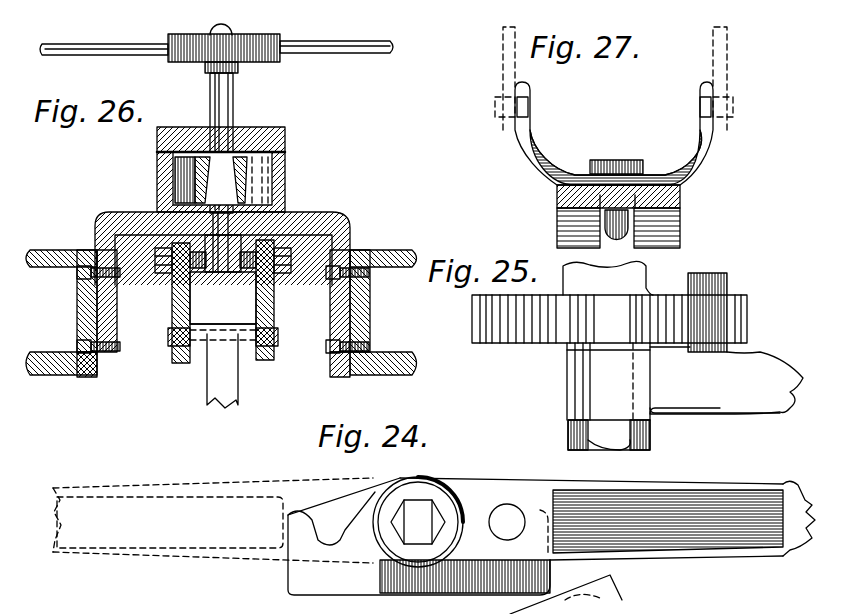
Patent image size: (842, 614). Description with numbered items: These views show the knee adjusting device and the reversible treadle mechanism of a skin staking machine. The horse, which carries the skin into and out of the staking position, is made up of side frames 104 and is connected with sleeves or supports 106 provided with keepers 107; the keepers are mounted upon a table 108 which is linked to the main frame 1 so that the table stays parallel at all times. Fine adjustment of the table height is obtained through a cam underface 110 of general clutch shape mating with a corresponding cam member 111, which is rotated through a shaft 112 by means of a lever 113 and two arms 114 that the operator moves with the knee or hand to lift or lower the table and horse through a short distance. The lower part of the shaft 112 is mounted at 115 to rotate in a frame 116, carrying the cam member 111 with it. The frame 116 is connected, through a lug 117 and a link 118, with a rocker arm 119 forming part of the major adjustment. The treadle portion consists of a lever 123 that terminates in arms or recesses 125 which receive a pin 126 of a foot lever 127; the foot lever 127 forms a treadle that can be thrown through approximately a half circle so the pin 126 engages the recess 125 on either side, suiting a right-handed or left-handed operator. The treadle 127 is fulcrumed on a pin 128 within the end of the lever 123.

In FIG. 26, the main frame 1 is at (77, 308).
In FIG. 27, the side frames 104 is at (503, 55).
In FIG. 27, the sleeves or supports 106 is at (548, 150).
In FIG. 27, the keepers 107 is at (633, 160).
In FIG. 27, the table 108 is at (665, 196).
In FIG. 26, the cam underface 110 is at (283, 155).
In FIG. 26, the cam member 111 is at (285, 180).
In FIG. 26, the shaft 112 is at (233, 104).
In FIG. 26, the lever 113 is at (232, 50).
In FIG. 26, the arms 114 is at (122, 46).
In FIG. 26, the shaft mounting 115 is at (218, 272).
In FIG. 26, the frame 116 is at (320, 232).
In FIG. 26, the lug 117 is at (250, 290).
In FIG. 26, the link 118 is at (172, 312).
In FIG. 26, the rocker arm 119 is at (215, 372).
In FIG. 25, the lever 123 is at (609, 302).
In FIG. 24, the lever 123 is at (385, 480).
In FIG. 25, the arms or recesses 125 is at (662, 305).
In FIG. 24, the arms or recesses 125 is at (337, 540).
In FIG. 25, the pin 126 is at (715, 290).
In FIG. 24, the pin 126 is at (508, 520).
In FIG. 25, the foot lever 127 is at (755, 400).
In FIG. 24, the foot lever 127 is at (170, 498).
In FIG. 25, the pin 128 is at (607, 432).